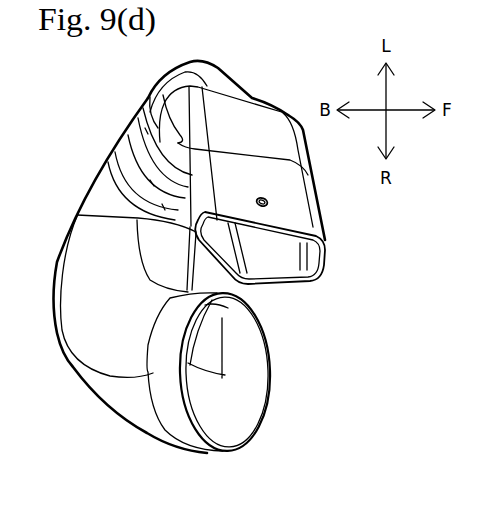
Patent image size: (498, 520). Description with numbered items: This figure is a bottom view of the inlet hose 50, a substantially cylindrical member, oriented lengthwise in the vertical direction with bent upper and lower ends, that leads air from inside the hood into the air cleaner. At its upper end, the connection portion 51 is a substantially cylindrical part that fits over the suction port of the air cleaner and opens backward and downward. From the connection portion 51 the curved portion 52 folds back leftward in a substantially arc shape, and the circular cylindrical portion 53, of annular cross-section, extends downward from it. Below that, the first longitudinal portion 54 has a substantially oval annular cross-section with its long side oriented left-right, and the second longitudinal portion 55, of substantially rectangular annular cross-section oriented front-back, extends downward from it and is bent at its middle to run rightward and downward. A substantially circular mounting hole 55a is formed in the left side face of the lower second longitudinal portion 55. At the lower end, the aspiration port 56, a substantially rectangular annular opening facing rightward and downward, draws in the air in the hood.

The inlet hose 50 is at (45, 87).
The connection portion 51 is at (250, 400).
The curved portion 52 is at (63, 343).
The circular cylindrical portion 53 is at (128, 140).
The first longitudinal portion 54 is at (211, 80).
The second longitudinal portion 55 is at (318, 196).
The mounting hole 55a is at (265, 206).
The aspiration port 56 is at (290, 283).